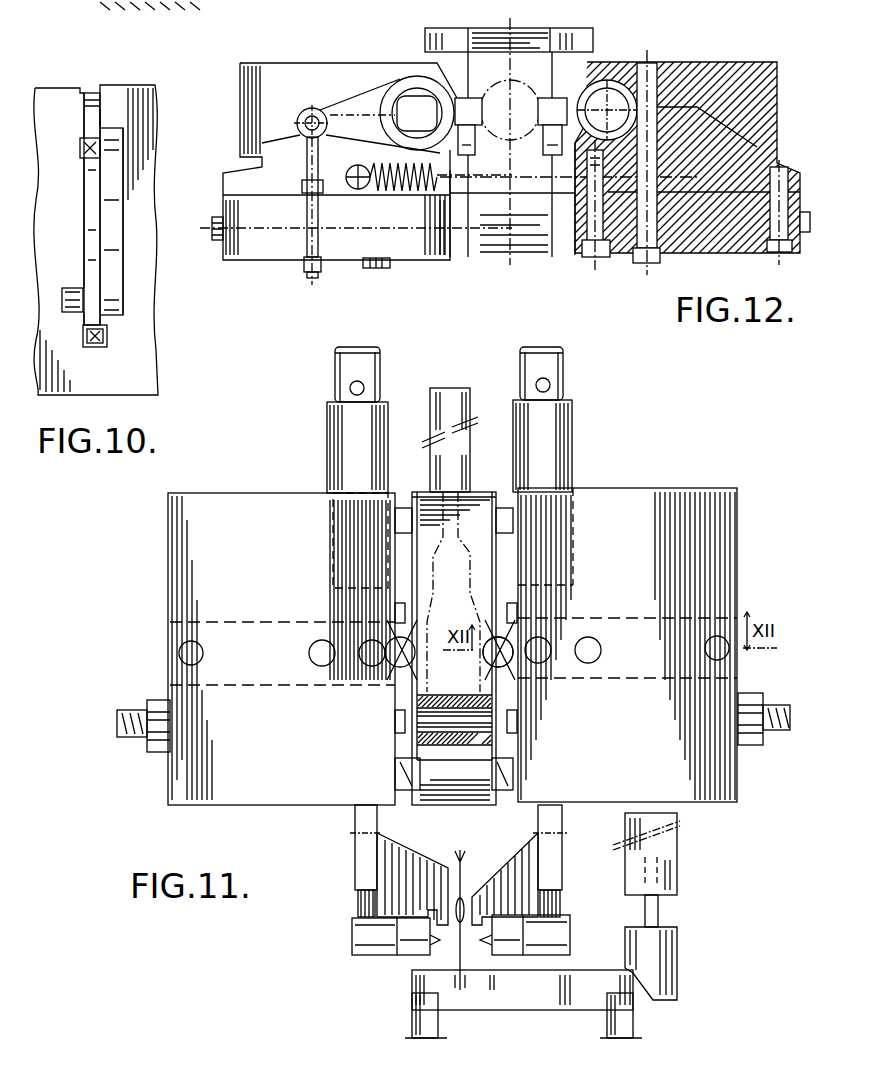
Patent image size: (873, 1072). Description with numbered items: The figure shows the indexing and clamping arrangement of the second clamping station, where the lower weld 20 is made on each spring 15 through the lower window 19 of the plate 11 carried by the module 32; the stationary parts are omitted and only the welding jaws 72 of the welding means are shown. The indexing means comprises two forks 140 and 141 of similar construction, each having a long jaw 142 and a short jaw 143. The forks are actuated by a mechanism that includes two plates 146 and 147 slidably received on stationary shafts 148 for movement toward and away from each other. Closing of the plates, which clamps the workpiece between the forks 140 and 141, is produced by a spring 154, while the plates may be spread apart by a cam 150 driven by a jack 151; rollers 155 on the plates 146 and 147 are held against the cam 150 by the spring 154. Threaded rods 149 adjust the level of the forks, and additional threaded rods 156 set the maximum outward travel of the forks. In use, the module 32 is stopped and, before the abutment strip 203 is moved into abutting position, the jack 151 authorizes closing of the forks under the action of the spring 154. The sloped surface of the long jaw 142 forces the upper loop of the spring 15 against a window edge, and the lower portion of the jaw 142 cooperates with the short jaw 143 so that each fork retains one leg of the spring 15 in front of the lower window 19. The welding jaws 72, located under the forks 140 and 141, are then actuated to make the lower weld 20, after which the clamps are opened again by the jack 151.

In FIG. 11, the plate 11 is at (457, 952).
In FIG. 10, the spring 15 is at (90, 201).
In FIG. 11, the spring 15 is at (465, 900).
In FIG. 10, the lower window 19 is at (103, 347).
In FIG. 10, the lower weld 20 is at (103, 337).
In FIG. 11, the module 32 is at (528, 988).
In FIG. 11, the welding jaws 72 is at (367, 942).
In FIG. 11, the fork 140 is at (402, 860).
In FIG. 11, the fork 141 is at (515, 867).
In FIG. 10, the long jaw 142 is at (117, 282).
In FIG. 10, the short jaw 143 is at (66, 287).
In FIG. 12, the plate 146 is at (287, 157).
In FIG. 11, the plate 146 is at (252, 517).
In FIG. 12, the plate 147 is at (730, 170).
In FIG. 11, the plate 147 is at (645, 508).
In FIG. 11, the stationary shafts 148 is at (505, 513).
In FIG. 11, the threaded rods 149 is at (355, 425).
In FIG. 11, the cam 150 is at (473, 563).
In FIG. 11, the jack 151 is at (452, 403).
In FIG. 12, the spring 154 is at (403, 187).
In FIG. 12, the rollers 155 is at (470, 107).
In FIG. 11, the rollers 155 is at (515, 670).
In FIG. 11, the threaded rods 156 is at (130, 712).
In FIG. 11, the abutment strip 203 is at (652, 945).